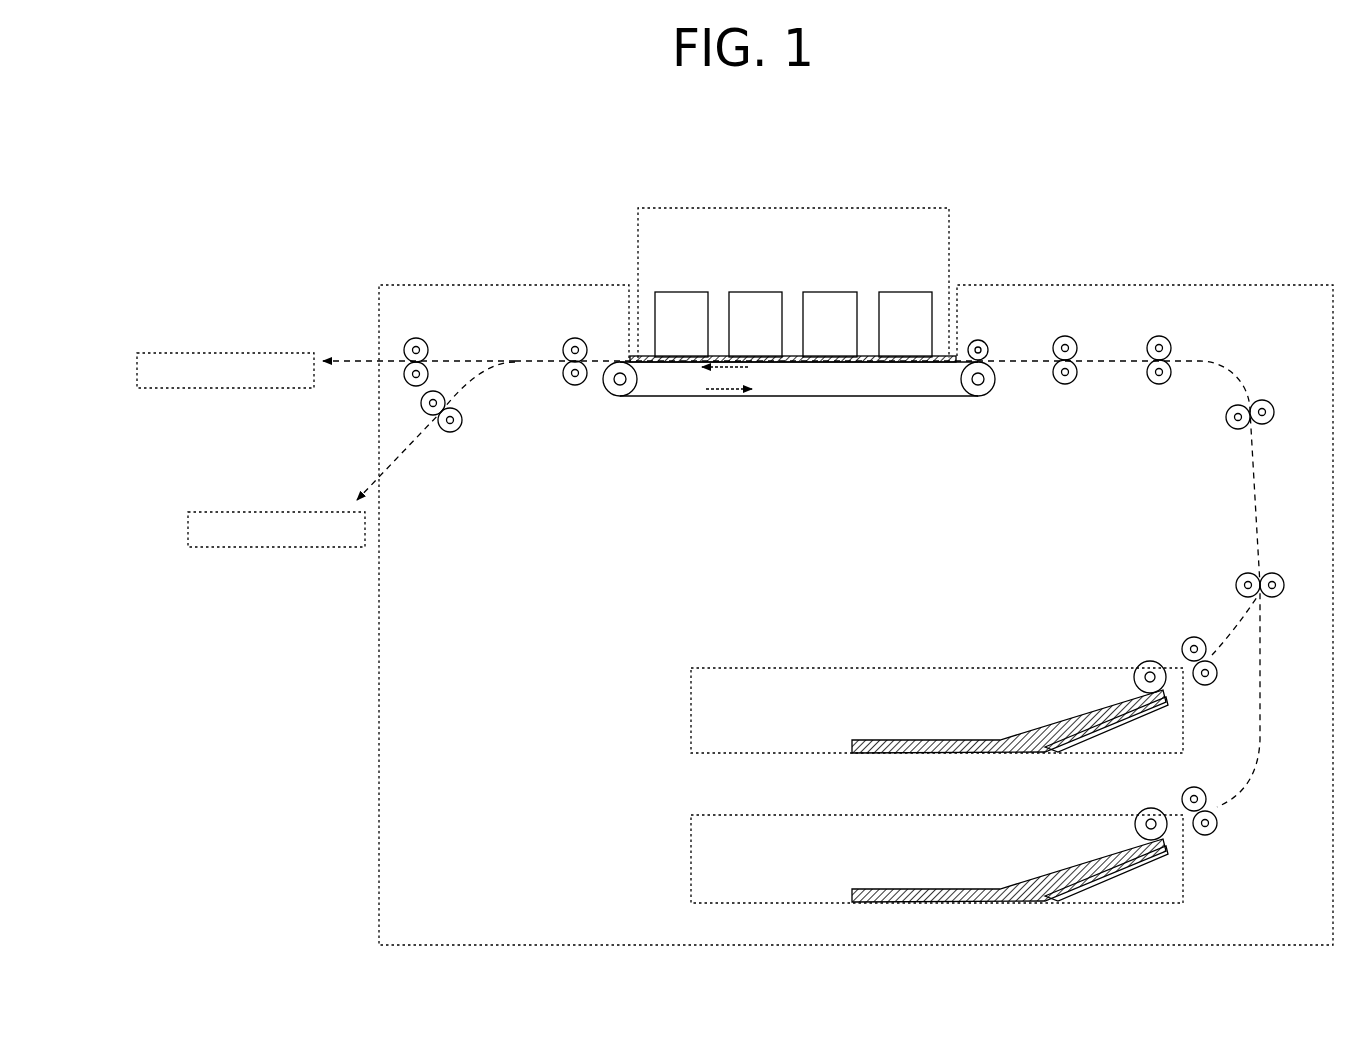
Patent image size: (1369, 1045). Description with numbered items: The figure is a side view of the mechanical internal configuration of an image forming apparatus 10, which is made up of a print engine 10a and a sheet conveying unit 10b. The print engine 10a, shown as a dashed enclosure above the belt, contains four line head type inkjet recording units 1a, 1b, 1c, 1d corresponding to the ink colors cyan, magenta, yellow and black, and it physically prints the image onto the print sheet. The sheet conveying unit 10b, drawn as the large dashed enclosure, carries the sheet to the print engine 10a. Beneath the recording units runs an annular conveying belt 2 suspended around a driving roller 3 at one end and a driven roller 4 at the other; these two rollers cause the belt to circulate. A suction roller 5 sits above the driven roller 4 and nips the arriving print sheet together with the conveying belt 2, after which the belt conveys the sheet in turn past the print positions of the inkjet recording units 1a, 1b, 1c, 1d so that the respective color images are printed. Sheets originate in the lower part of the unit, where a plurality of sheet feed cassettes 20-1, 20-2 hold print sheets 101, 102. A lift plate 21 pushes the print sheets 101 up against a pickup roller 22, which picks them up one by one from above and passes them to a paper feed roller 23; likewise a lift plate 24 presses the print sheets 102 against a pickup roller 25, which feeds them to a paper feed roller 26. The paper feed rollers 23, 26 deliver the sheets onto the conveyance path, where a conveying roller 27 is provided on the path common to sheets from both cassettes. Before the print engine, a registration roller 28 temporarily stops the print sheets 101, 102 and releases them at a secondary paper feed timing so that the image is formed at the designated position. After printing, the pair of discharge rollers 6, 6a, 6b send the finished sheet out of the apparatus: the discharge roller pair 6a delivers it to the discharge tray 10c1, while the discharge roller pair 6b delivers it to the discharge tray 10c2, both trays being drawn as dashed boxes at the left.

The image forming apparatus 10 is at (1293, 163).
The print engine 10a is at (914, 208).
The sheet conveying unit 10b is at (1297, 283).
The discharge tray 10c1 is at (276, 353).
The discharge tray 10c2 is at (313, 512).
The inkjet recording unit 1a is at (912, 290).
The inkjet recording unit 1b is at (839, 290).
The inkjet recording unit 1c is at (763, 290).
The inkjet recording unit 1d is at (689, 290).
The conveying belt 2 is at (838, 398).
The driving roller 3 is at (609, 392).
The driven roller 4 is at (987, 393).
The suction roller 5 is at (985, 342).
The discharge roller pair 6 is at (572, 338).
The discharge roller pair 6a is at (416, 338).
The discharge roller pair 6b is at (458, 429).
The conveying roller 27 is at (1162, 337).
The registration roller 28 is at (1066, 337).
The sheet feed cassette 20-1 is at (691, 705).
The sheet feed cassette 20-2 is at (691, 852).
The print sheets 101 is at (870, 742).
The print sheets 102 is at (870, 890).
The lift plate 21 is at (1068, 743).
The pickup roller 22 is at (1135, 665).
The paper feed roller 23 is at (1184, 642).
The lift plate 24 is at (1068, 891).
The pickup roller 25 is at (1138, 812).
The paper feed roller 26 is at (1182, 793).